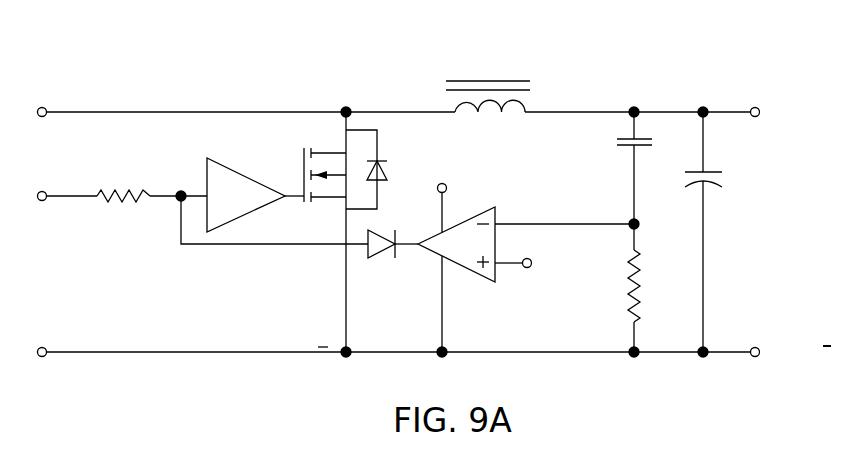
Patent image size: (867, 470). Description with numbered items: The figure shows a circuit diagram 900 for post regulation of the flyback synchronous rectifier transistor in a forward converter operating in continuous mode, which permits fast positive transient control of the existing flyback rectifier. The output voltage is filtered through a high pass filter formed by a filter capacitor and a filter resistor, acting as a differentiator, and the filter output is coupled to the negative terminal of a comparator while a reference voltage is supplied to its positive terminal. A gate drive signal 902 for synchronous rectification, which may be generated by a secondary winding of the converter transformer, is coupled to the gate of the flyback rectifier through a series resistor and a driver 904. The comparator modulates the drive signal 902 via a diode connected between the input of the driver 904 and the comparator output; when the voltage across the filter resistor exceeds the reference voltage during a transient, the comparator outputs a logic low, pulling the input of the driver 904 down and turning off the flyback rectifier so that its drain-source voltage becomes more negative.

The circuit diagram 900 is at (163, 55).
The gate drive signal 902 is at (60, 197).
The driver 904 is at (245, 176).